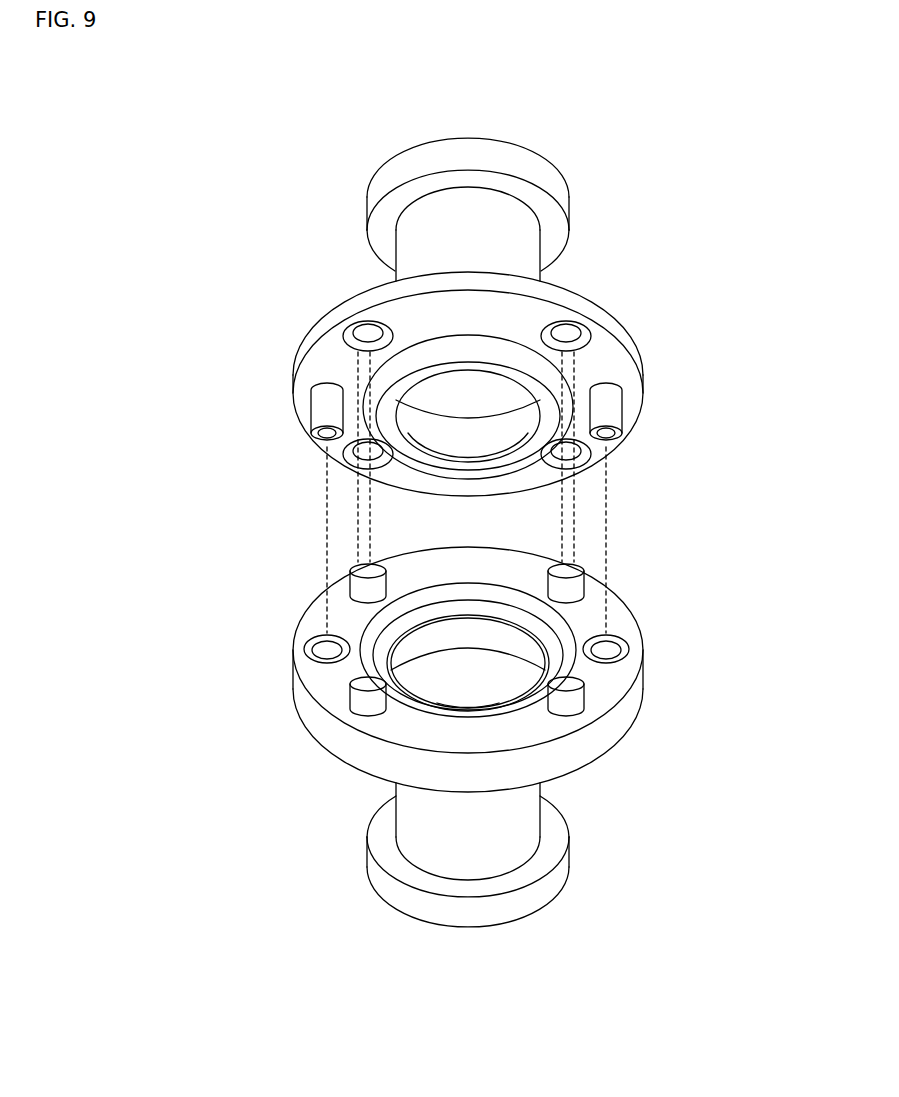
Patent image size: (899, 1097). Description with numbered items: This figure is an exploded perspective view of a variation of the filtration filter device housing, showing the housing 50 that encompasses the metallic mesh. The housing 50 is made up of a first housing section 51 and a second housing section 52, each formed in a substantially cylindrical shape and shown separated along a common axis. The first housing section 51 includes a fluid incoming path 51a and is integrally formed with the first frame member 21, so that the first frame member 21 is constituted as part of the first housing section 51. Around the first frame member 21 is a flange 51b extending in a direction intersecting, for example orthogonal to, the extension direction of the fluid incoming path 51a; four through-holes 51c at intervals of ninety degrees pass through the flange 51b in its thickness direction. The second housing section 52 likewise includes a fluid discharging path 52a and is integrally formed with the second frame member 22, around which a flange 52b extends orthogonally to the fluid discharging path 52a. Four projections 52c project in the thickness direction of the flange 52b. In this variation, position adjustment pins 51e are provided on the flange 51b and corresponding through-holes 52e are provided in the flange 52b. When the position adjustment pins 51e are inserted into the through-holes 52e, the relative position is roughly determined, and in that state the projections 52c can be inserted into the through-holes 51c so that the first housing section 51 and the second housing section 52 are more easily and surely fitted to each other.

The housing 50 is at (492, 527).
The first housing section 51 is at (476, 440).
The fluid incoming path 51a is at (472, 388).
The flange 51b is at (622, 362).
The through-holes 51c is at (352, 330).
The position adjustment pins 51e is at (320, 412).
The second housing section 52 is at (467, 647).
The fluid discharging path 52a is at (440, 665).
The flange 52b is at (630, 620).
The projections 52c is at (585, 565).
The through-holes 52e is at (315, 653).
The first frame member 21 is at (537, 437).
The second frame member 22 is at (510, 617).